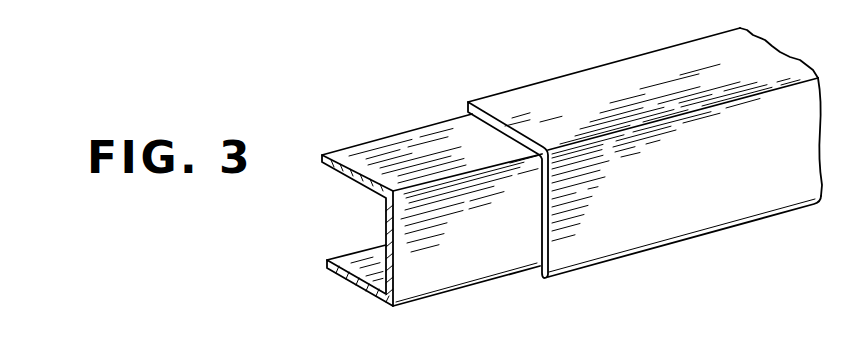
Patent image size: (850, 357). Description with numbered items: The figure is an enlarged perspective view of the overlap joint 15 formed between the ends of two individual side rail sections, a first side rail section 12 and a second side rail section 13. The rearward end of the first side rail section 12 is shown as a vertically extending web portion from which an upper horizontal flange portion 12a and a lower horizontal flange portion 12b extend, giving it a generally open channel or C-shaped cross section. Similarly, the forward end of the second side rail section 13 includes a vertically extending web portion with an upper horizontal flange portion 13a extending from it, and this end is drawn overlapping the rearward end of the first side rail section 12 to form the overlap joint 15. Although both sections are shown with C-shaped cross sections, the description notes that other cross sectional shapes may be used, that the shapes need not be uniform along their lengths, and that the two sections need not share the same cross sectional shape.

The first side rail section 12 is at (448, 255).
The upper horizontal flange portion 12a is at (372, 160).
The lower horizontal flange portion 12b is at (353, 265).
The second side rail section 13 is at (725, 197).
The upper horizontal flange portion 13a is at (627, 85).
The overlap joint 15 is at (447, 102).